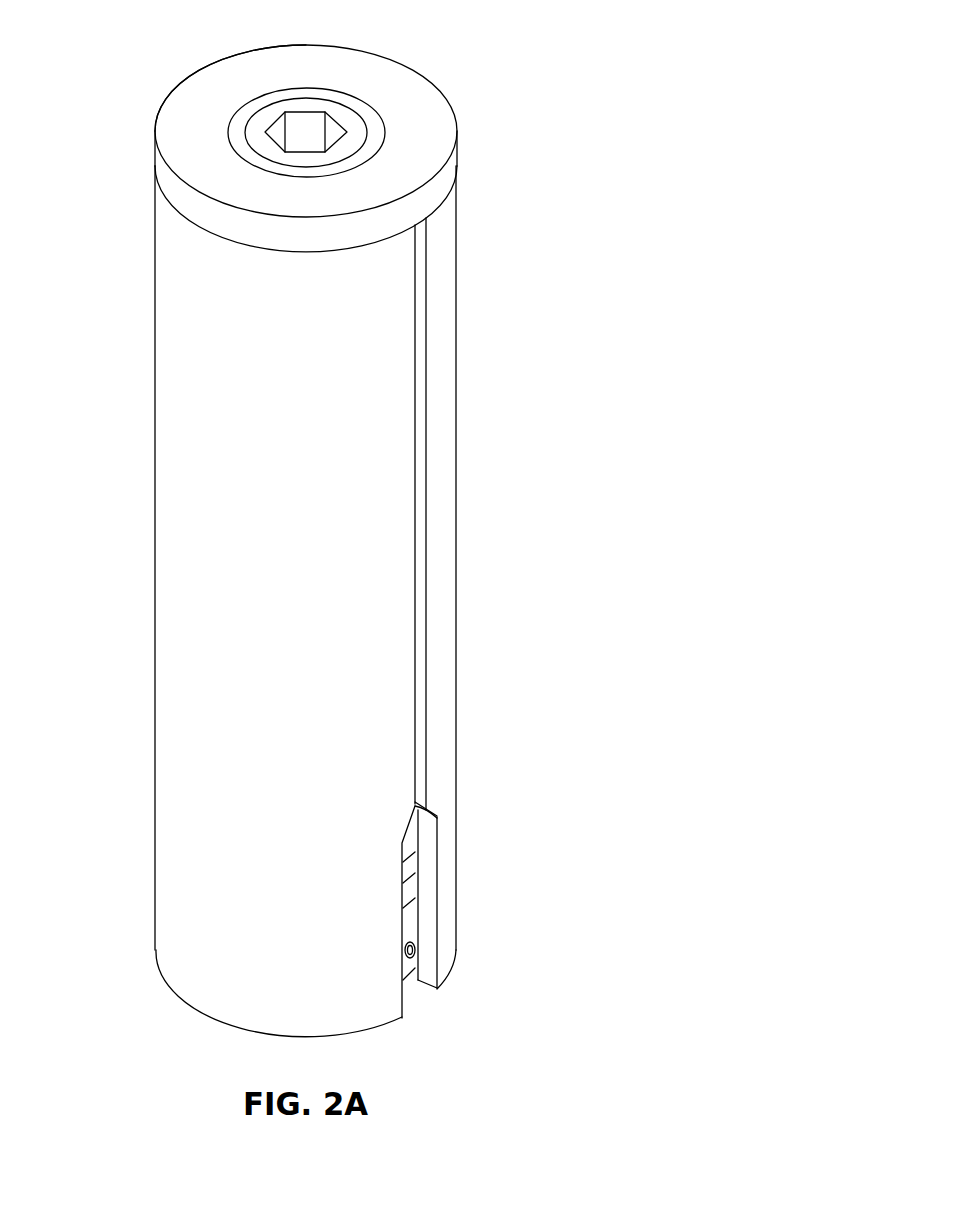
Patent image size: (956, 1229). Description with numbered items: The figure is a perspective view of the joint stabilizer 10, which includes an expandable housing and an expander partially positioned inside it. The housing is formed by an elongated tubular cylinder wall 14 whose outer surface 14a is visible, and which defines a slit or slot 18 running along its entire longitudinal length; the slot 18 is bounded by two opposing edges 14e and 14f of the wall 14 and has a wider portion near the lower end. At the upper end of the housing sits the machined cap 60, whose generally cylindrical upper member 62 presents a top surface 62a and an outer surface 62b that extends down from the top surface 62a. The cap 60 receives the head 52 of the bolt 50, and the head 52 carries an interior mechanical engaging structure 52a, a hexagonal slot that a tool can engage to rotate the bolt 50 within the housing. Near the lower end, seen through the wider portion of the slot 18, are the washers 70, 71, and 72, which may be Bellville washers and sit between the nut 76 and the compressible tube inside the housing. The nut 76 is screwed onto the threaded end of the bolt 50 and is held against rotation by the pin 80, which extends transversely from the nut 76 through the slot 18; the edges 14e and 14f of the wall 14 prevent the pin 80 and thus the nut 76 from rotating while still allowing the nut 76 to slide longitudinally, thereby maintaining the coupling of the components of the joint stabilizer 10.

The joint stabilizer 10 is at (552, 136).
The tubular cylinder wall 14 is at (155, 438).
The outer surface 14a is at (175, 487).
The edge 14e is at (420, 563).
The edge 14f is at (414, 537).
The slit or slot 18 is at (420, 417).
The bolt 50 is at (341, 115).
The head 52 is at (353, 123).
The mechanical engaging structure 52a is at (280, 132).
The machined cap 60 is at (200, 120).
The upper member 62 is at (193, 206).
The top surface 62a is at (187, 155).
The outer surface 62b is at (172, 186).
The washer 70 is at (410, 842).
The washer 71 is at (410, 866).
The washer 72 is at (410, 895).
The nut 76 is at (410, 922).
The pin 80 is at (416, 948).